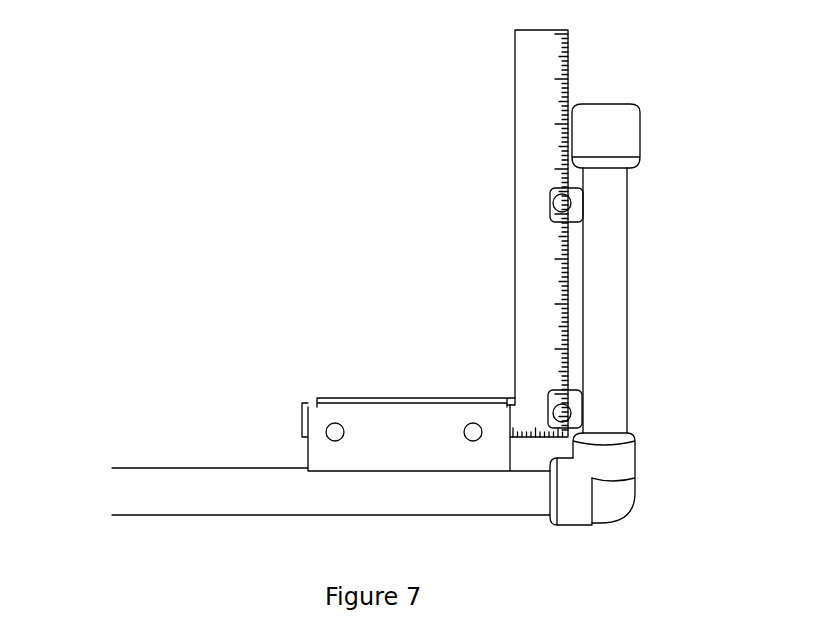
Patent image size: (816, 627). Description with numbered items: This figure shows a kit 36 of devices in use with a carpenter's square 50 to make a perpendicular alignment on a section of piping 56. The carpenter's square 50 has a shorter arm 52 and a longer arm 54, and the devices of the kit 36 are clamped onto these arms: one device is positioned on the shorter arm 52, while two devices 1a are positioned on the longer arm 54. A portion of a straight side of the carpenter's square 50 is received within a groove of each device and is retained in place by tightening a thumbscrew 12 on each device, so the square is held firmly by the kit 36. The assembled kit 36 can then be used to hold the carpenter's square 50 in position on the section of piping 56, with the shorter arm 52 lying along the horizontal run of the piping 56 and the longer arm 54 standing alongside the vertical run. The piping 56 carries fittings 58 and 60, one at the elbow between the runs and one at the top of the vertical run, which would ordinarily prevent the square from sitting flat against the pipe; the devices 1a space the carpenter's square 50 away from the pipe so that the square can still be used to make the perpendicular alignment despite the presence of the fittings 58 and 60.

The kit 36 is at (393, 256).
The carpenter's square 50 is at (540, 287).
The shorter arm 52 is at (318, 418).
The longer arm 54 is at (540, 98).
The piping 56 is at (538, 510).
The fitting 58 is at (613, 497).
The fitting 60 is at (608, 137).
The thumbscrew 12 is at (570, 200).
The device 1a is at (577, 210).